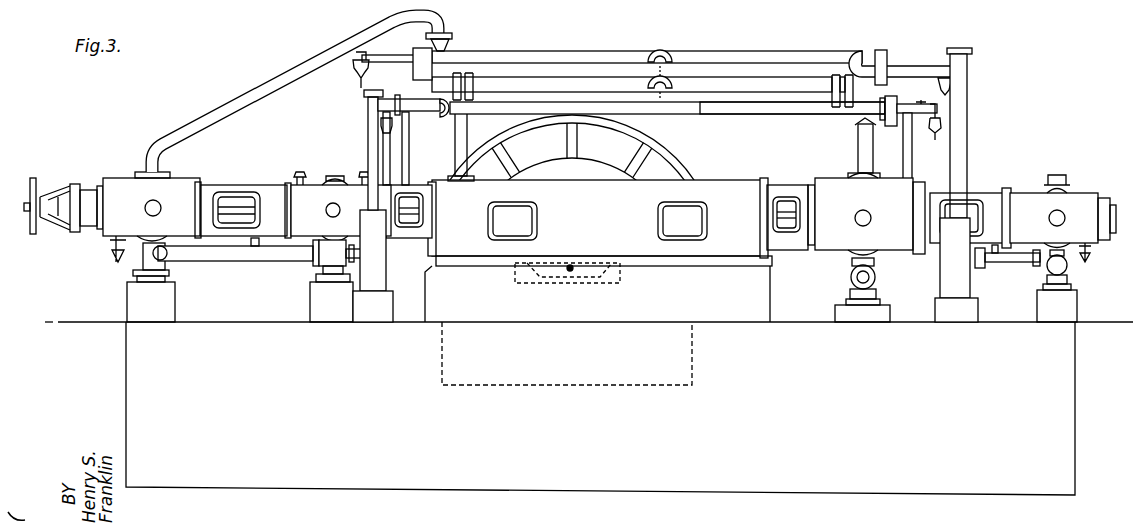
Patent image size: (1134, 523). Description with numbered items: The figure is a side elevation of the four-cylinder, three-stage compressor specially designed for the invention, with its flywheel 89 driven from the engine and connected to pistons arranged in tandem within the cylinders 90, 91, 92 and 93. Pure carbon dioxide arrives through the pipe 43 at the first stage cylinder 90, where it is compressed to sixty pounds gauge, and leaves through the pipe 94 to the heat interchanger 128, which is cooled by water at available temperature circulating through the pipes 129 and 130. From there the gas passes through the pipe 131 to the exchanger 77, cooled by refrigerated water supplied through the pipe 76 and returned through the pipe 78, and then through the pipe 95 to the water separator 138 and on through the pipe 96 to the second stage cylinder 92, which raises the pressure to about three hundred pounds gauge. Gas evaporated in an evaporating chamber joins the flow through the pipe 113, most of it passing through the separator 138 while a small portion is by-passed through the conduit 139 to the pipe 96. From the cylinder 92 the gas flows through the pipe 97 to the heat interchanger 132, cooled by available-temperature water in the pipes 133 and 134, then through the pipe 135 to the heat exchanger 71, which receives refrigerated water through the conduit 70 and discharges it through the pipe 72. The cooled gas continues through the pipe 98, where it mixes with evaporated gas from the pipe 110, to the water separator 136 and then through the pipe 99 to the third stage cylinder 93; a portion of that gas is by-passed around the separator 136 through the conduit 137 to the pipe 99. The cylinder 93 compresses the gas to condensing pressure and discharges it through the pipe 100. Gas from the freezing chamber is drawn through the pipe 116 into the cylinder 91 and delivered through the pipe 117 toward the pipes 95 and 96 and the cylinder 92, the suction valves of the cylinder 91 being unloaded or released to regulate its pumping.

The pipe 43 is at (850, 277).
The conduit 70 is at (906, 104).
The heat exchanger 71 is at (776, 56).
The pipe 72 is at (951, 90).
The pipe 76 is at (420, 118).
The exchanger 77 is at (587, 104).
The pipe 78 is at (388, 134).
The flywheel 89 is at (672, 148).
The first stage cylinder 90 is at (893, 245).
The cylinder 91 is at (303, 200).
The second stage cylinder 92 is at (120, 192).
The third stage cylinder 93 is at (1028, 196).
The pipe 94 is at (858, 150).
The pipe 95 is at (368, 128).
The pipe 96 is at (278, 261).
The pipe 97 is at (246, 102).
The pipe 98 is at (960, 109).
The pipe 99 is at (1025, 265).
The pipe 100 is at (1067, 182).
The pipe 110 is at (966, 52).
The pipe 113 is at (364, 94).
The pipe 116 is at (336, 180).
The pipe 117 is at (313, 268).
The heat interchanger 128 is at (791, 106).
The pipe 129 is at (900, 127).
The pipe 130 is at (928, 138).
The pipe 131 is at (674, 91).
The heat interchanger 132 is at (556, 57).
The pipe 133 is at (413, 99).
The pipe 134 is at (363, 85).
The pipe 135 is at (672, 44).
The water separator 136 is at (949, 276).
The conduit 137 is at (988, 263).
The water separator 138 is at (383, 262).
The conduit 139 is at (252, 247).